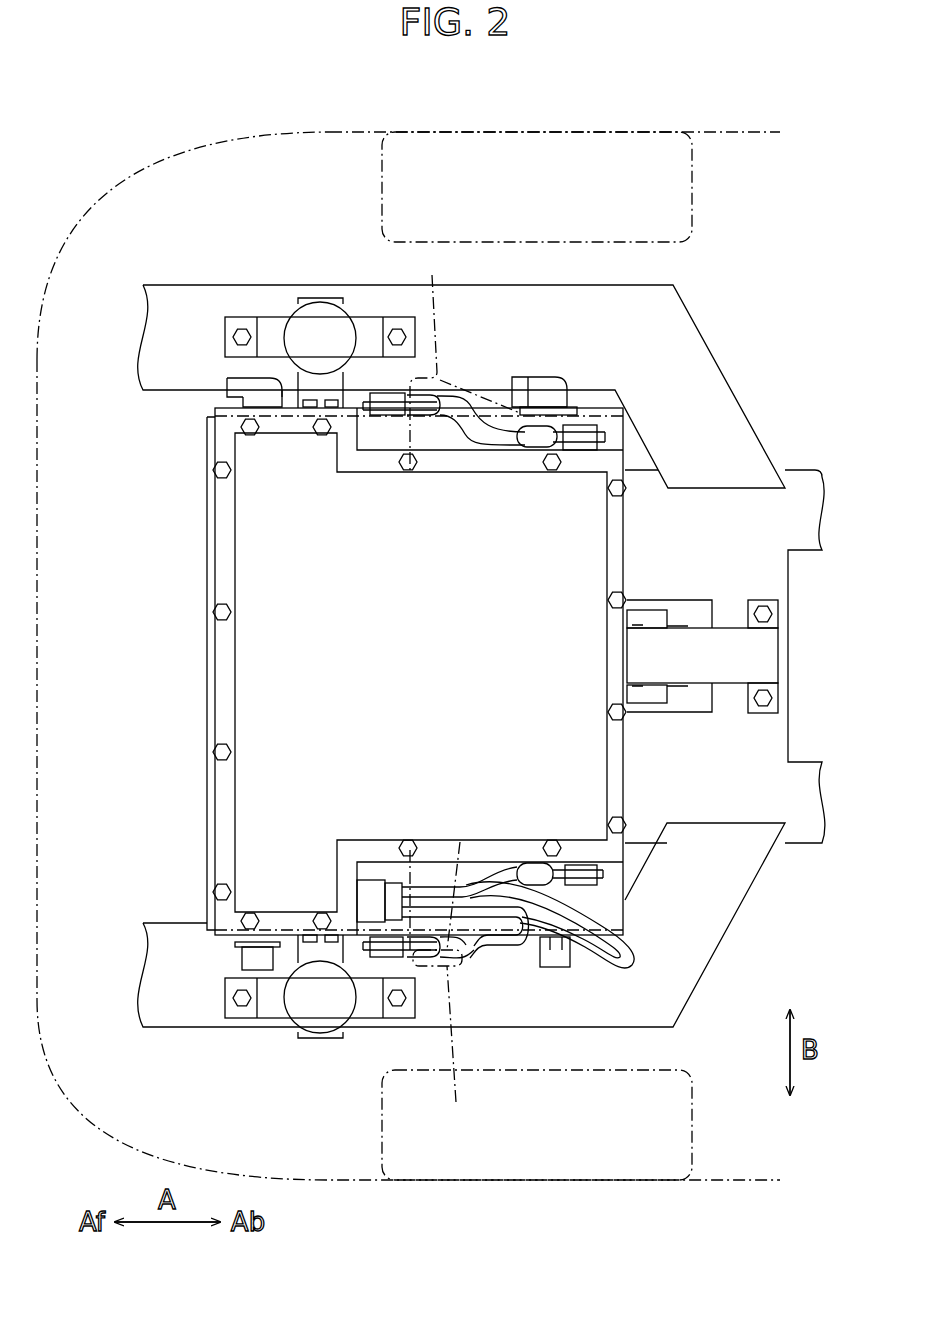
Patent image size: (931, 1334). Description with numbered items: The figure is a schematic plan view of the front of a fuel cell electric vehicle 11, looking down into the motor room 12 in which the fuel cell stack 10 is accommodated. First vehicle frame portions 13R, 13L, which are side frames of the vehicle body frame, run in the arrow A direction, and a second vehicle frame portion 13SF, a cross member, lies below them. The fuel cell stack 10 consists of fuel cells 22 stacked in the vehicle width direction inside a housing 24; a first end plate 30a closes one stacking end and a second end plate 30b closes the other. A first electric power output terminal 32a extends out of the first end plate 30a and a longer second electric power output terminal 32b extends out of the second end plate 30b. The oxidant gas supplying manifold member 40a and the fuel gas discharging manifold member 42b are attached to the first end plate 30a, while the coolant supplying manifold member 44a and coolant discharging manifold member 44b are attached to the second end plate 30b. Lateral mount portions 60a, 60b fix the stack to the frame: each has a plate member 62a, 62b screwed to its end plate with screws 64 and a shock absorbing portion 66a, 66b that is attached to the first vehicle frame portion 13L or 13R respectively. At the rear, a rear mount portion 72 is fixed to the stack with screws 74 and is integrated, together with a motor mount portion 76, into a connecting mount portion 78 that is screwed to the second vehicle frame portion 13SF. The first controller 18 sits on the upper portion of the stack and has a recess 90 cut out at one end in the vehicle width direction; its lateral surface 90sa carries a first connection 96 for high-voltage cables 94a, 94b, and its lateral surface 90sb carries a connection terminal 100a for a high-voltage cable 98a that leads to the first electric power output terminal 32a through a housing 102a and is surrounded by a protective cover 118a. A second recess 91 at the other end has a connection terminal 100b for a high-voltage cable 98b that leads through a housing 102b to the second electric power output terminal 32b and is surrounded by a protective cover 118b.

The fuel cell stack 10 is at (205, 660).
The fuel cell electric vehicle 11 is at (747, 128).
The motor room 12 is at (326, 148).
The first vehicle frame portion 13R is at (170, 285).
The first vehicle frame portion 13L is at (165, 1030).
The second vehicle frame portion 13SF is at (660, 574).
The first controller 18 is at (622, 547).
The fuel cells 22 is at (276, 634).
The housing 24 is at (205, 712).
The first end plate 30a is at (550, 940).
The second end plate 30b is at (606, 418).
The first electric power output terminal 32a is at (385, 962).
The second electric power output terminal 32b is at (386, 412).
The oxidant gas supplying manifold member 40a is at (560, 966).
The fuel gas discharging manifold member 42b is at (243, 955).
The coolant supplying manifold member 44a is at (537, 392).
The coolant discharging manifold member 44b is at (260, 395).
The lateral mount portion 60a is at (301, 1055).
The lateral mount portion 60b is at (287, 300).
The plate member 62a is at (312, 958).
The plate member 62b is at (308, 381).
The screws 64 is at (310, 410).
The shock absorbing portion 66a is at (323, 1012).
The shock absorbing portion 66b is at (323, 325).
The rear mount portion 72 is at (643, 703).
The screws 74 is at (213, 470).
The motor mount portion 76 is at (682, 705).
The connecting mount portion 78 is at (750, 659).
The recess 90 is at (422, 926).
The lateral surface 90sa is at (376, 890).
The lateral surface 90sb is at (493, 848).
The recess 91 is at (455, 435).
The high-voltage cable 94a is at (634, 950).
The high-voltage cable 94b is at (452, 887).
The first connection 96 is at (381, 878).
The high-voltage cable 98a is at (466, 940).
The high-voltage cable 98b is at (482, 436).
The connection terminal 100a is at (582, 883).
The connection terminal 100b is at (584, 433).
The housing 102a is at (418, 968).
The housing 102b is at (372, 384).
The protective cover 118a is at (451, 987).
The protective cover 118b is at (458, 358).